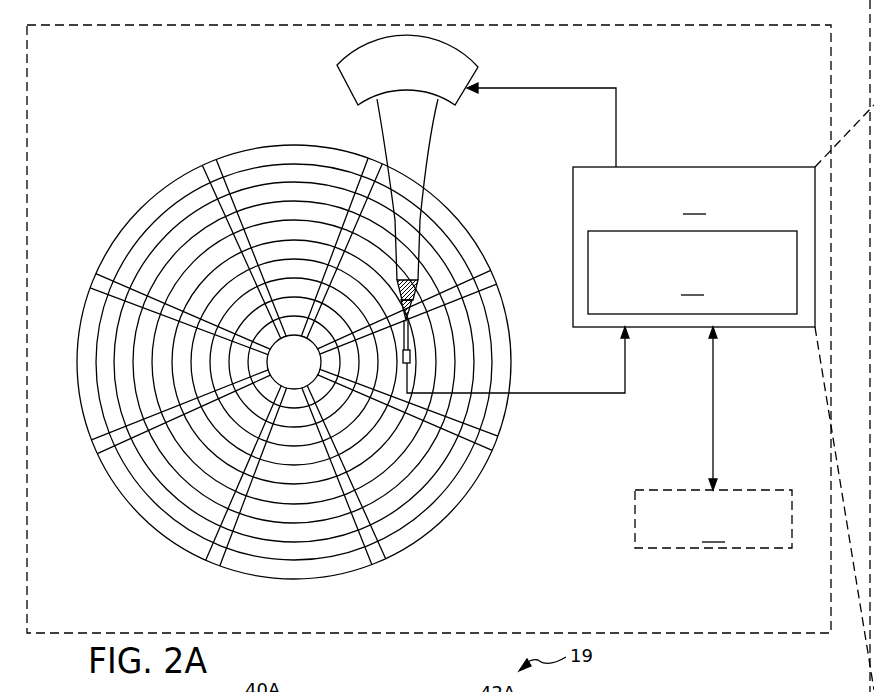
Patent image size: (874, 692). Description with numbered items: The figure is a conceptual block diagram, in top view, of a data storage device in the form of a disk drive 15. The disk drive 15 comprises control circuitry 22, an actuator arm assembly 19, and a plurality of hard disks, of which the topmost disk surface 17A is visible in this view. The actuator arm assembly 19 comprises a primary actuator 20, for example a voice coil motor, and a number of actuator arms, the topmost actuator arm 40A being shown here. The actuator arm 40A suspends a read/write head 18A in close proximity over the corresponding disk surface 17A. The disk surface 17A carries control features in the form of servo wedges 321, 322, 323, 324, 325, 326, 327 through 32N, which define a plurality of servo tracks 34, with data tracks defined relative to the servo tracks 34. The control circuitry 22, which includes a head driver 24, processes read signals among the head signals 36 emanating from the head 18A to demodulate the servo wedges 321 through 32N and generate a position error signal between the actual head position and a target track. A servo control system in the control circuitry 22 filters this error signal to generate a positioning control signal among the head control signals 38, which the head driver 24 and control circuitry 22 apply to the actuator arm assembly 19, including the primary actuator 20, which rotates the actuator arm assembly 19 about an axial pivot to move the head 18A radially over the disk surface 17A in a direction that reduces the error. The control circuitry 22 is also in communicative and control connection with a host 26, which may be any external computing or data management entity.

The disk drive 15 is at (746, 641).
The disk surface 17A is at (298, 358).
The read/write head 18A is at (422, 367).
The actuator arm assembly 19 is at (455, 157).
The primary actuator 20 is at (482, 98).
The control circuitry 22 is at (694, 247).
The head driver 24 is at (692, 272).
The host 26 is at (713, 437).
The servo wedge 32N is at (370, 162).
The servo wedge 321 is at (210, 158).
The servo wedge 322 is at (90, 283).
The servo wedge 323 is at (92, 445).
The servo wedge 324 is at (210, 568).
The servo wedge 325 is at (382, 566).
The servo wedge 326 is at (498, 440).
The servo wedge 327 is at (495, 276).
The servo tracks 34 is at (302, 170).
The head signals 36 is at (605, 395).
The head control signals 38 is at (616, 112).
The actuator arm 40A is at (421, 170).